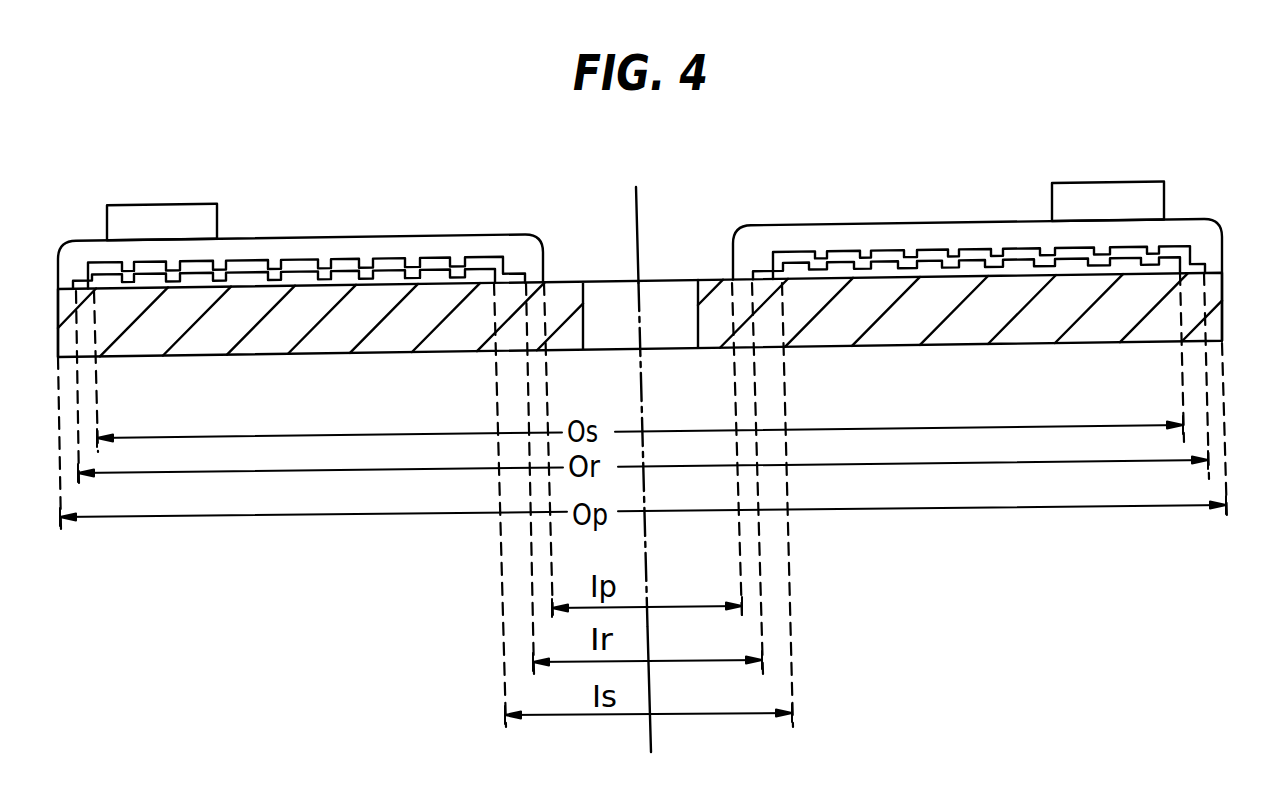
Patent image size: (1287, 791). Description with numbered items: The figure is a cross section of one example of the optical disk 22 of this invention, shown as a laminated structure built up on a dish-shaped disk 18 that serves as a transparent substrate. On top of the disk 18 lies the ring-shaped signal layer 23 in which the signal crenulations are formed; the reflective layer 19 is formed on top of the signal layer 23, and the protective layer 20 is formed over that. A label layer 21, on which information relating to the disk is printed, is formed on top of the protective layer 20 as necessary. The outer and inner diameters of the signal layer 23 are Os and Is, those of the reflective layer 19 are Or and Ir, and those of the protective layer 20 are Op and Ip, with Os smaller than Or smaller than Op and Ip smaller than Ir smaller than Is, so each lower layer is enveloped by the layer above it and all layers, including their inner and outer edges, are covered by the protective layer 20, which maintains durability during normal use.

The disk 18 is at (123, 348).
The reflective layer 19 is at (437, 259).
The protective layer 20 is at (250, 240).
The label layer 21 is at (142, 206).
The optical disk 22 is at (318, 643).
The signal layer 23 is at (262, 277).